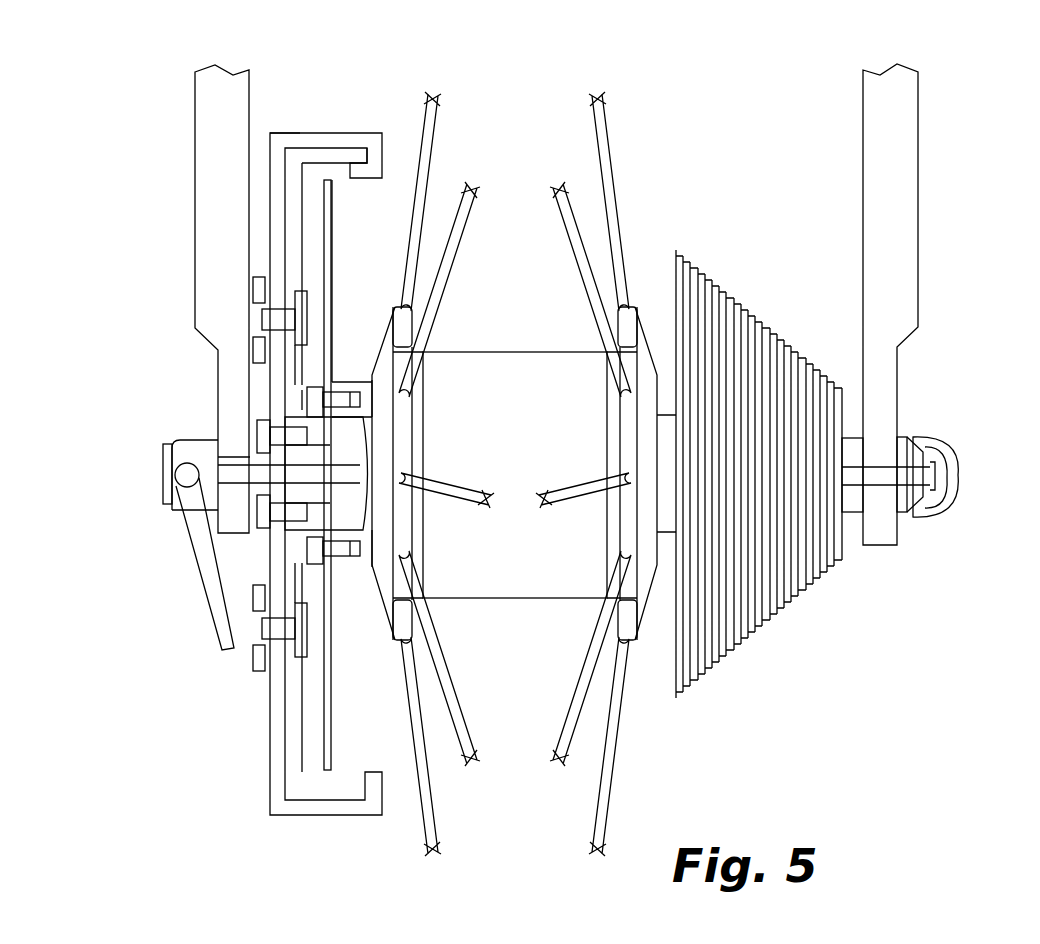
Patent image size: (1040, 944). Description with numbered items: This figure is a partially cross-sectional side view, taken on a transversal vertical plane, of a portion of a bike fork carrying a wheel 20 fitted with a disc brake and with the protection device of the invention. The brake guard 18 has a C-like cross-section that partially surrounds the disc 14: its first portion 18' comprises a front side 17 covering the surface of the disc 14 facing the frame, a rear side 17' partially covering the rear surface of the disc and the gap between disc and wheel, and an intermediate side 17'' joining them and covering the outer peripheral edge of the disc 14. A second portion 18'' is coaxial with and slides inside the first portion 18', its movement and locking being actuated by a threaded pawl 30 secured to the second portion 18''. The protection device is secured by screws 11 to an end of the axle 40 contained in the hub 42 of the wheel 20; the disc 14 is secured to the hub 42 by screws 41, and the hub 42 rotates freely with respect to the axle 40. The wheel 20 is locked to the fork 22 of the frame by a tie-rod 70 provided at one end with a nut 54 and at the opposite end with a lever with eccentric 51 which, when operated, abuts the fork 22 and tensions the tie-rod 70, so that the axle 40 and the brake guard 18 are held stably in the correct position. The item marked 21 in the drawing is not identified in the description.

The screws 11 is at (263, 520).
The disc 14 is at (328, 190).
The front side 17 is at (316, 424).
The rear side 17' is at (391, 112).
The intermediate side 17'' is at (299, 93).
The brake guard 18 is at (329, 402).
The first portion 18' is at (218, 306).
The second portion 18'' is at (349, 292).
The wheel 20 is at (632, 166).
The brush cone 21 is at (745, 605).
The fork 22 is at (220, 133).
The threaded pawl 30 is at (267, 318).
The axle 40 is at (330, 443).
The screws 41 is at (342, 550).
The hub 42 is at (518, 573).
The lever with eccentric 51 is at (165, 450).
The nut 54 is at (915, 455).
The tie-rod 70 is at (327, 477).